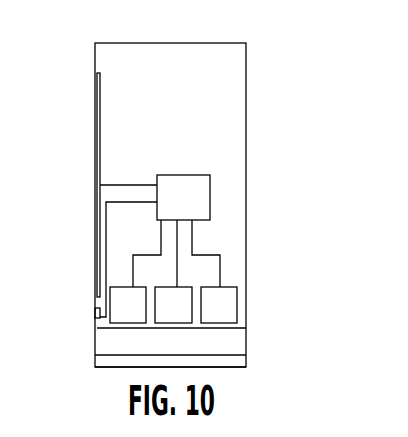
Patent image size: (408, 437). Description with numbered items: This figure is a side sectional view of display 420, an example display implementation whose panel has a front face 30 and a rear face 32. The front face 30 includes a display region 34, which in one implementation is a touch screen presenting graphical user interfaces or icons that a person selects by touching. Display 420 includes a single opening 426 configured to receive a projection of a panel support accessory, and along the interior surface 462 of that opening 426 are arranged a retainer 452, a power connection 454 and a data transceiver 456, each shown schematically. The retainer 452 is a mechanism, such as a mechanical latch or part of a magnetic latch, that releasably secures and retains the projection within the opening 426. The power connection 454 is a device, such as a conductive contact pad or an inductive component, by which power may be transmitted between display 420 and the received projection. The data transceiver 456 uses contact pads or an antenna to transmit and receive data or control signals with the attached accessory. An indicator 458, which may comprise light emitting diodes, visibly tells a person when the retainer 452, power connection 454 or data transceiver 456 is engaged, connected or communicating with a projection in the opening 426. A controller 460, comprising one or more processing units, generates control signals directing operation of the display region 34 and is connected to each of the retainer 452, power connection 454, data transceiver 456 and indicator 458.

The display 420 is at (54, 67).
The front face 30 is at (60, 115).
The rear face 32 is at (305, 121).
The display region 34 is at (95, 173).
The controller 460 is at (210, 207).
The retainer 452 is at (122, 286).
The indicator 458 is at (94, 316).
The power connection 454 is at (193, 323).
The data transceiver 456 is at (238, 310).
The interior surface 462 is at (137, 329).
The opening 426 is at (93, 358).